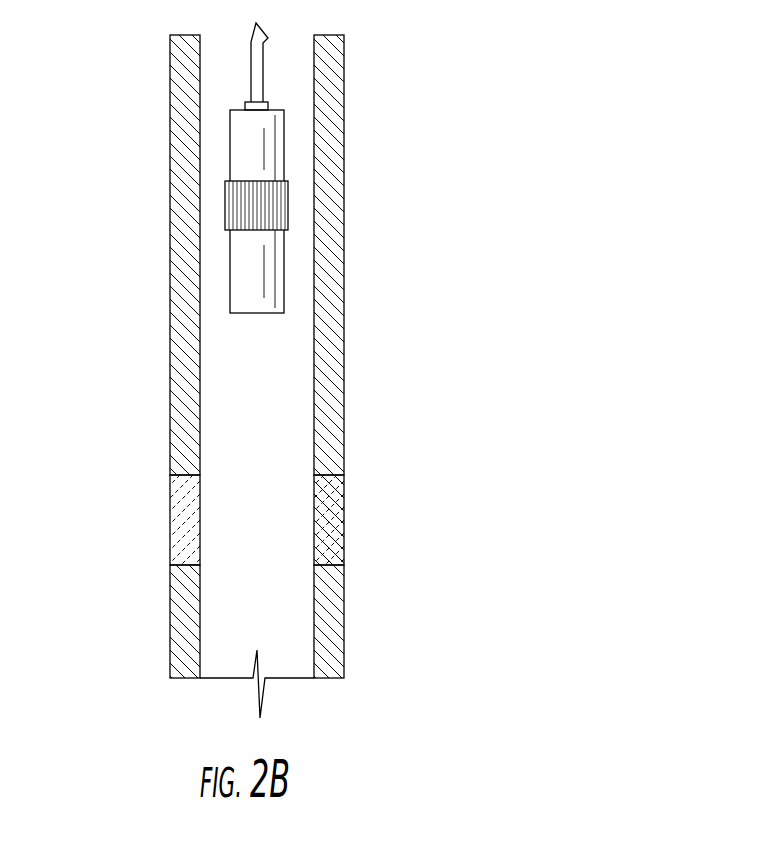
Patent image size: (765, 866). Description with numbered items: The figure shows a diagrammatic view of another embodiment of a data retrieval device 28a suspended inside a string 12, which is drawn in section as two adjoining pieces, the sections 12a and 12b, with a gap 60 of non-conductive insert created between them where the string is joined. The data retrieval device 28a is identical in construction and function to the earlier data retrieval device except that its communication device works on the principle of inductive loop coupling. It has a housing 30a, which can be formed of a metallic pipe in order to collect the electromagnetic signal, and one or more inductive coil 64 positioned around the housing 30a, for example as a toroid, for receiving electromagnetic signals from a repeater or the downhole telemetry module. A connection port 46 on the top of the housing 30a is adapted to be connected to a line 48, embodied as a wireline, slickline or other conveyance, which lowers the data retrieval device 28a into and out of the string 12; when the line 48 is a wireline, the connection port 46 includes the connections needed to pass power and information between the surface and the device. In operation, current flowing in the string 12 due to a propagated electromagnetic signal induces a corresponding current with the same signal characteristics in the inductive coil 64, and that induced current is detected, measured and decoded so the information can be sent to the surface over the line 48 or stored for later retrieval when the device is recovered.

The string 12 is at (105, 347).
The adjoining section of the string 12a is at (344, 387).
The adjoining section of the string 12b is at (344, 623).
The gap 60 is at (344, 513).
The data retrieval device 28a is at (293, 135).
The housing 30a is at (230, 155).
The connection port 46 is at (268, 103).
The line 48 is at (250, 77).
The inductive coil 64 is at (225, 212).